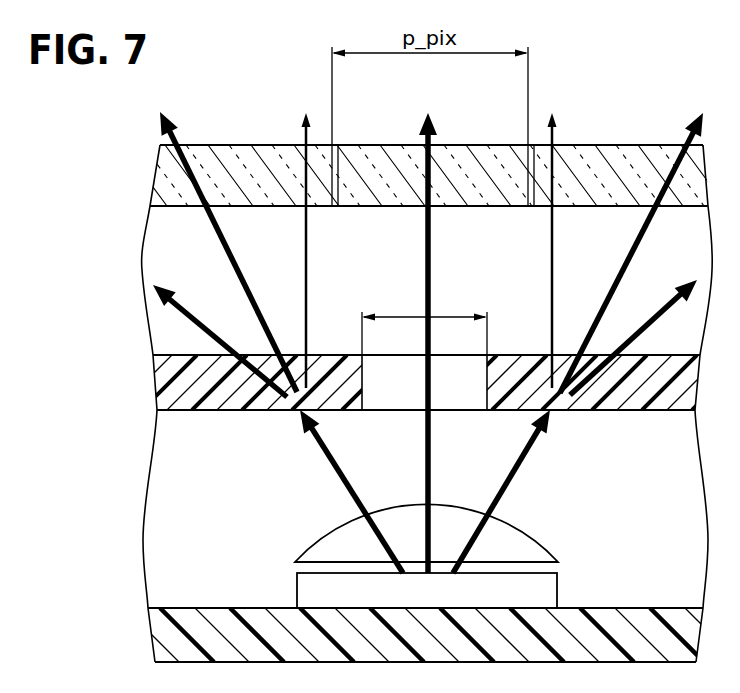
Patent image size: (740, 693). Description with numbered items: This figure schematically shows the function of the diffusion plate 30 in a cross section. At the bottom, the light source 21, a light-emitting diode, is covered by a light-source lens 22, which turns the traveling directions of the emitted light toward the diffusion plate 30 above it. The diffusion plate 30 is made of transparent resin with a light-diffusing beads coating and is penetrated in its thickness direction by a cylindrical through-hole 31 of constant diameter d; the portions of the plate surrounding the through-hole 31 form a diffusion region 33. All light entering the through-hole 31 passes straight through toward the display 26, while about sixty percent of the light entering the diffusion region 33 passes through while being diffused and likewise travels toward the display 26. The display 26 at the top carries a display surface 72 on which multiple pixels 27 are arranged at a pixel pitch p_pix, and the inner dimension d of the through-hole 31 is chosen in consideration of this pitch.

The light source 21 is at (297, 593).
The light-source lens 22 is at (312, 530).
The display 26 is at (294, 148).
The pixel 27 is at (202, 150).
The diffusion plate 30 is at (416, 350).
The through-hole 31 is at (362, 390).
The diffusion region 33 is at (336, 355).
The display surface 72 is at (655, 150).